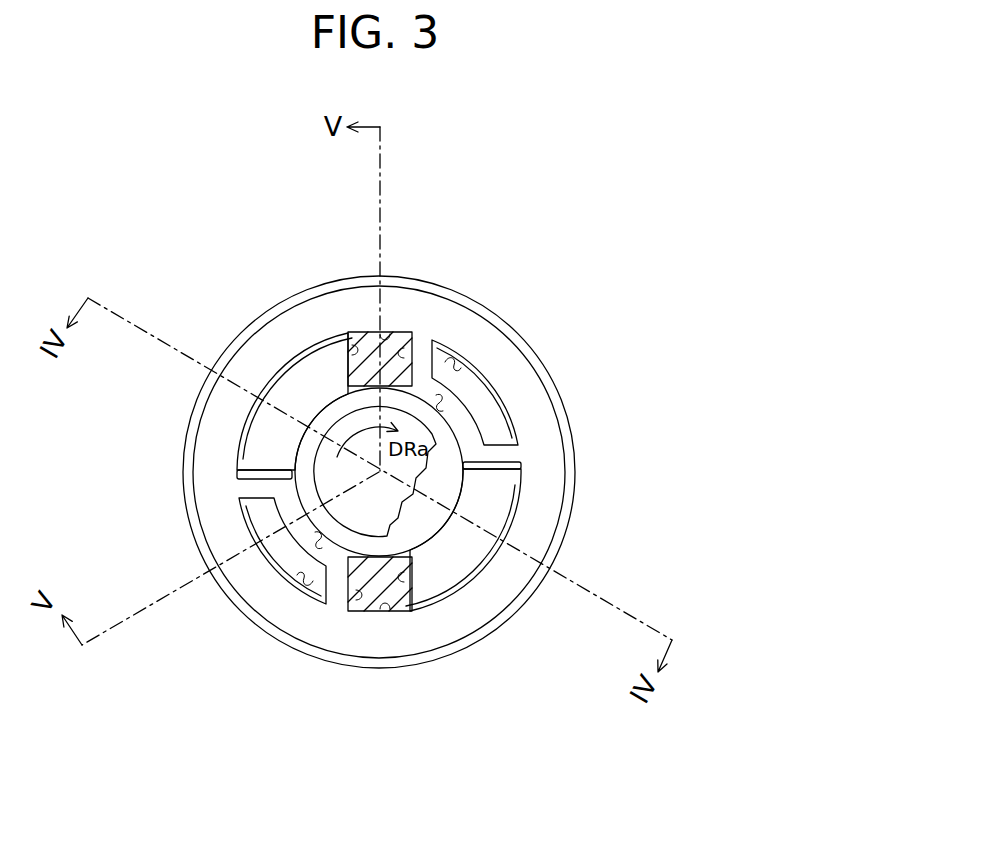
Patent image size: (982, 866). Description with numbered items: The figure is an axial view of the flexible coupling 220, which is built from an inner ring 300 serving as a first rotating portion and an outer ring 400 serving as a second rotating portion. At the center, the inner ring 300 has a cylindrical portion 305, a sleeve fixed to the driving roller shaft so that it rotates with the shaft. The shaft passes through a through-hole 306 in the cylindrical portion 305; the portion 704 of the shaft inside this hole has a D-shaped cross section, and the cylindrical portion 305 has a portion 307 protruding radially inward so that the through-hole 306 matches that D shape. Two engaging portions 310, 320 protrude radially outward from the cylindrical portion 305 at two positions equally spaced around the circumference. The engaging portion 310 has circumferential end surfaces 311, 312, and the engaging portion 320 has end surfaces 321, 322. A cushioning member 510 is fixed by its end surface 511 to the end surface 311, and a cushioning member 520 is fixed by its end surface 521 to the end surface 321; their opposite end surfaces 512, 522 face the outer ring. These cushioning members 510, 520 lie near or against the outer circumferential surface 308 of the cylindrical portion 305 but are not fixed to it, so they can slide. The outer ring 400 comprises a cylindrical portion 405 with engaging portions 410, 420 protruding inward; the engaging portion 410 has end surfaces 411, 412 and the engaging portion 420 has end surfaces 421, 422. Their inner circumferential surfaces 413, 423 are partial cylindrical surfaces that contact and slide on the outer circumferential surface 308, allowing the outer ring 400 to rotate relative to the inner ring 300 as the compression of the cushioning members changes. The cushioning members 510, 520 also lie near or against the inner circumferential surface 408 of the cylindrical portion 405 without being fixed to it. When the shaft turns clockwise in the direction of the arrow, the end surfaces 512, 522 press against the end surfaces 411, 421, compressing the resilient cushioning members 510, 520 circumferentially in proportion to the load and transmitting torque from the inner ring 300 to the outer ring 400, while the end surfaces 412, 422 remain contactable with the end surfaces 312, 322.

The coupling 220 is at (808, 471).
The inner ring 300 is at (297, 436).
The cylindrical portion 305 is at (263, 385).
The through-hole 306 is at (457, 553).
The portion protruding inwardly 307 is at (437, 487).
The outer circumferential surface 308 is at (358, 332).
The engaging portion 310 is at (277, 380).
The end surface 311 is at (343, 378).
The end surface 312 is at (290, 480).
The engaging portion 320 is at (462, 572).
The end surface 321 is at (413, 614).
The end surface 322 is at (488, 452).
The outer ring 400 is at (524, 366).
The cylindrical portion 405 is at (522, 385).
The inner circumferential surface 408 is at (402, 332).
The engaging portion 410 is at (512, 379).
The end surface 411 is at (476, 364).
The end surface 412 is at (492, 466).
The inner circumferential surface 413 is at (470, 438).
The engaging portion 420 is at (292, 560).
The end surface 421 is at (357, 610).
The end surface 422 is at (247, 472).
The inner circumferential surface 423 is at (320, 570).
The cushioning member 510 is at (423, 342).
The end surface 511 is at (302, 376).
The end surface 512 is at (434, 378).
The cushioning member 520 is at (370, 611).
The end surface 521 is at (452, 583).
The end surface 522 is at (352, 612).
The portion of the shaft 704 is at (298, 512).